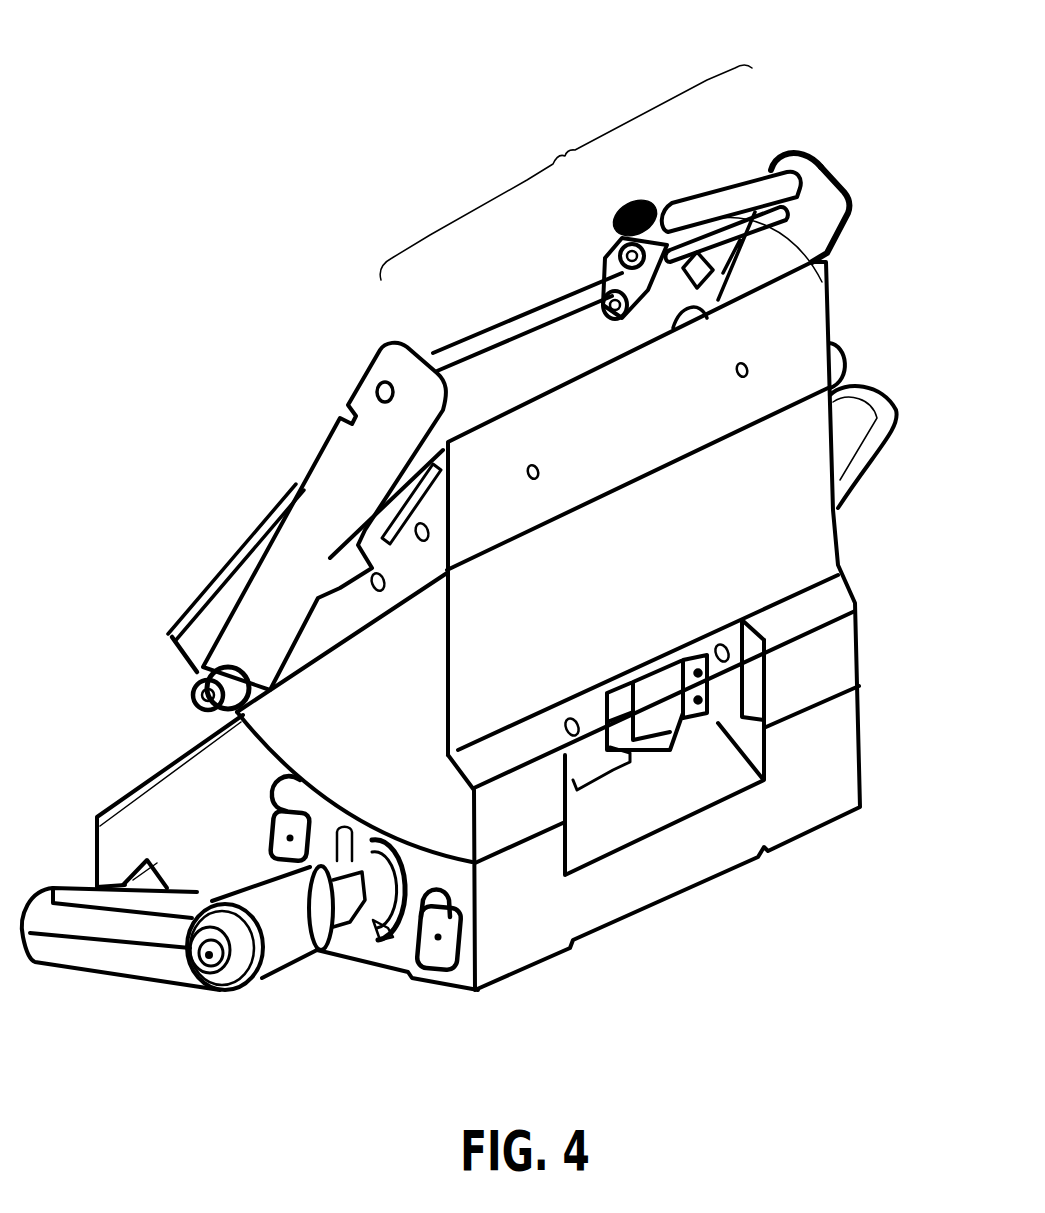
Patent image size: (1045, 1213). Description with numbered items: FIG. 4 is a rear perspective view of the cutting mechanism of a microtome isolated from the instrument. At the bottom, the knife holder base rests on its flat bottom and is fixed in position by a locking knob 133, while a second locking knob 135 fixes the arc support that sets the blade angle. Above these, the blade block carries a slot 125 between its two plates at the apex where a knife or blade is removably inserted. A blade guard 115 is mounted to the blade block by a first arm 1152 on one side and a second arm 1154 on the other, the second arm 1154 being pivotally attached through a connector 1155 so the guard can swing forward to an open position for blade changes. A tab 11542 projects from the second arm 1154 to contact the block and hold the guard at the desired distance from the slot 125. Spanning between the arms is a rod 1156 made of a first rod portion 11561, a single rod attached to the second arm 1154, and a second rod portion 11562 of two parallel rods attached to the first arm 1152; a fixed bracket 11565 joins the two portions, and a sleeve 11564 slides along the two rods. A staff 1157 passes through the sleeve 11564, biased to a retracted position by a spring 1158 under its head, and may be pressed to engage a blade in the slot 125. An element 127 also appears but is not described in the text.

The blade guard 115 is at (815, 147).
The first arm 1152 is at (848, 222).
The second arm 1154 is at (373, 373).
The tab 11542 is at (304, 490).
The connector 1155 is at (193, 683).
The rod 1156 is at (566, 172).
The first rod portion 11561 is at (500, 333).
The second rod portion 11562 is at (612, 205).
The sleeve 11564 is at (602, 268).
The bracket 11565 is at (620, 318).
The staff 1157 is at (795, 151).
The spring 1158 is at (652, 222).
The slot 125 is at (464, 416).
The base body 127 is at (852, 534).
The locking knob 133 is at (130, 964).
The locking knob 135 is at (885, 412).